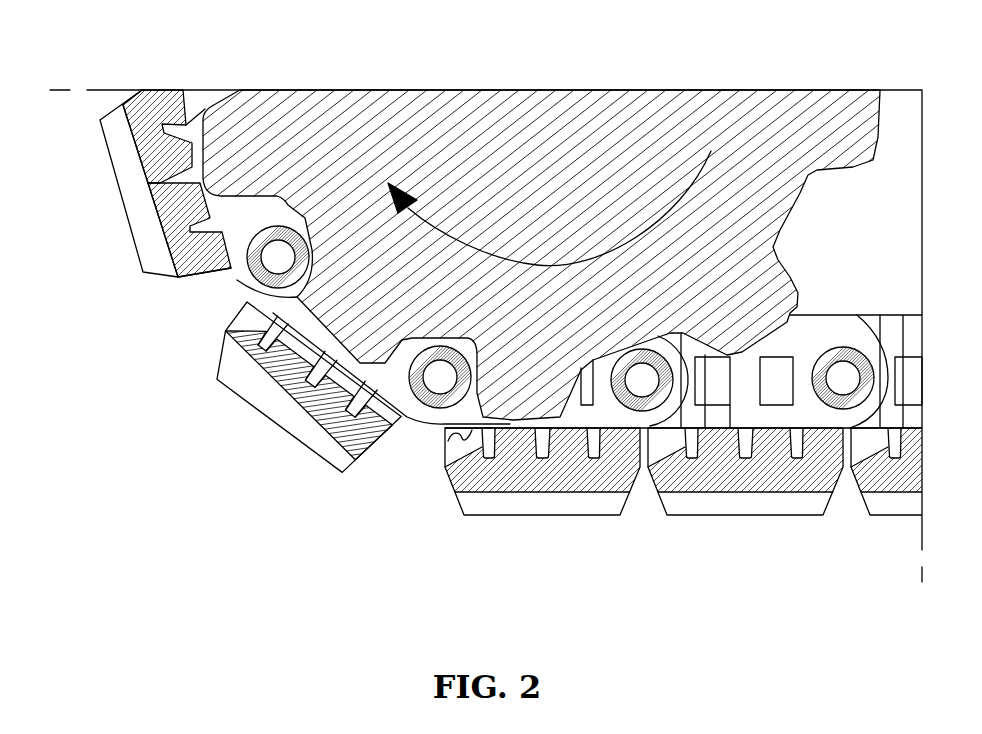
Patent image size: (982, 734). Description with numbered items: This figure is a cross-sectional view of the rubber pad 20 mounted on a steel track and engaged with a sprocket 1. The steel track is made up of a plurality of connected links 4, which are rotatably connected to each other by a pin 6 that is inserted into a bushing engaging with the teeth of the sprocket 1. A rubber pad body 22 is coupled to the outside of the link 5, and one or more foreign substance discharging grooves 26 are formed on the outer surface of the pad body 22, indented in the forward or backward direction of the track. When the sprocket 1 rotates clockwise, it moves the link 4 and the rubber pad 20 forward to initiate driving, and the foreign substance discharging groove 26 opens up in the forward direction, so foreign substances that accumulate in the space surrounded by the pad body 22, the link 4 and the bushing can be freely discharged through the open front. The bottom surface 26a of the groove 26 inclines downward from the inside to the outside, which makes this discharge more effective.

The sprocket 1 is at (418, 118).
The link 4 is at (237, 238).
The link 5 is at (173, 181).
The pin 6 is at (273, 262).
The rubber pad 20 is at (576, 428).
The rubber pad body 22 is at (527, 507).
The foreign substance discharging groove 26 is at (348, 446).
The bottom surface 26a is at (448, 447).